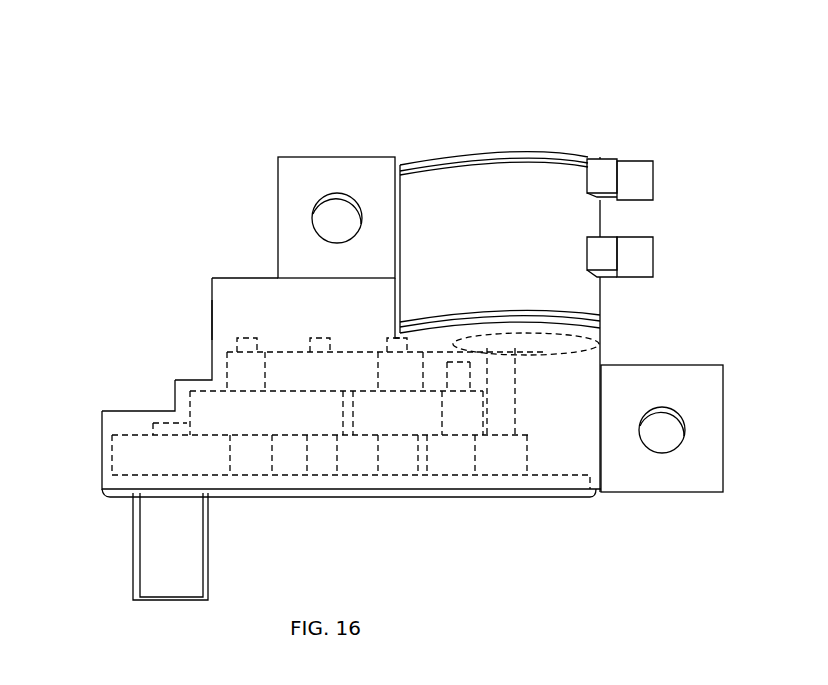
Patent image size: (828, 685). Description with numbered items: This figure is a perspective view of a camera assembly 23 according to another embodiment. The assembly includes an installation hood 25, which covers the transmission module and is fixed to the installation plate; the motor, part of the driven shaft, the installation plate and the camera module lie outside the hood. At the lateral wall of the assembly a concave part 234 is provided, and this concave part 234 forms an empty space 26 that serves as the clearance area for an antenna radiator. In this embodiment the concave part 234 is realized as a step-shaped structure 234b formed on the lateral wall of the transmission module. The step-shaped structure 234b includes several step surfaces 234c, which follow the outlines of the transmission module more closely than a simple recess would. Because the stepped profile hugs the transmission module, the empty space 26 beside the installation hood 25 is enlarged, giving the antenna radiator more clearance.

The solenoid assembly 23 is at (286, 84).
The installation hood 25 is at (243, 294).
The empty space 26 is at (135, 333).
The concave part 234 is at (127, 410).
The step-shaped structure 234b is at (212, 320).
The step surfaces 234c is at (198, 380).